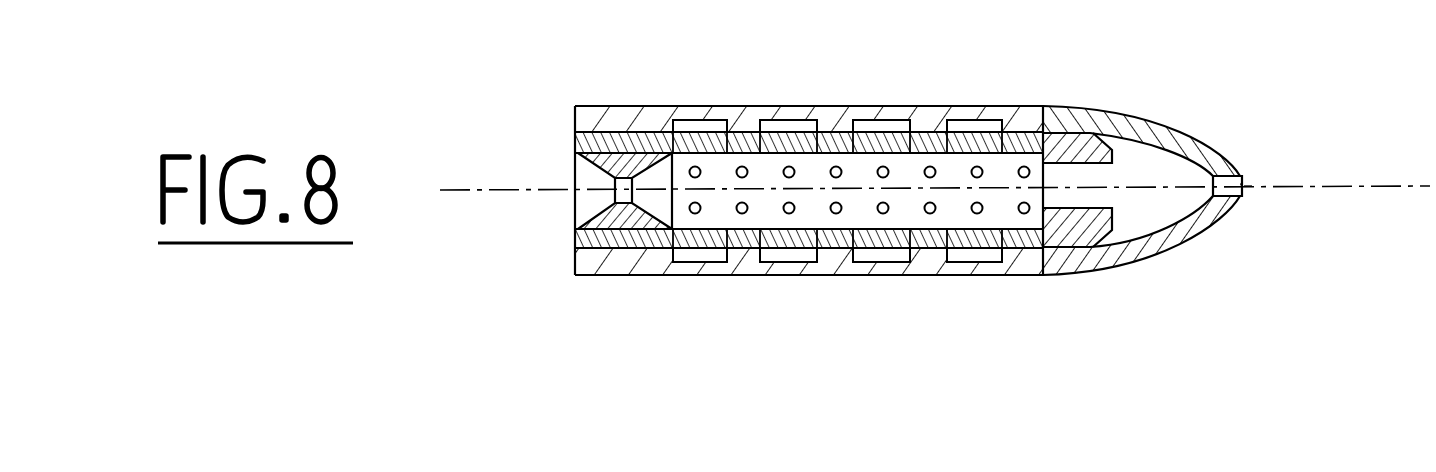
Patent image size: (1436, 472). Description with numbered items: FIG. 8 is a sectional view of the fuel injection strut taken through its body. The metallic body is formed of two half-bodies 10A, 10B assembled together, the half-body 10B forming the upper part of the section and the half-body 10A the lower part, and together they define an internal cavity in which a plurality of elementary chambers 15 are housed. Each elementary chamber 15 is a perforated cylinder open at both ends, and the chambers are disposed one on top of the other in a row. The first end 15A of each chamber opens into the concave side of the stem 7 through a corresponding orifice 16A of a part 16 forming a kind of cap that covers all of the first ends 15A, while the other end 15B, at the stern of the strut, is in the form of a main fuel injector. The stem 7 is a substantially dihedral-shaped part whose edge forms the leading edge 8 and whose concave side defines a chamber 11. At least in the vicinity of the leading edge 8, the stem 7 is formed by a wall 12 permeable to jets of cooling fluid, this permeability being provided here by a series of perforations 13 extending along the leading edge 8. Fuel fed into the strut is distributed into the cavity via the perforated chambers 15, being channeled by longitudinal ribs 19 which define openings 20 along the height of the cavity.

The stem 7 is at (1262, 213).
The leading edge 8 is at (1243, 165).
The half-body 10A is at (610, 275).
The half-body 10B is at (602, 106).
The chamber 11 is at (1178, 130).
The wall 12 is at (1190, 245).
The perforations 13 is at (1245, 182).
The elementary chamber 15 is at (765, 178).
The first end 15A is at (1017, 203).
The other end 15B is at (624, 195).
The part forming a cap 16 is at (1120, 238).
The orifice 16A is at (1080, 173).
The longitudinal rib 19 is at (840, 252).
The opening 20 is at (884, 257).